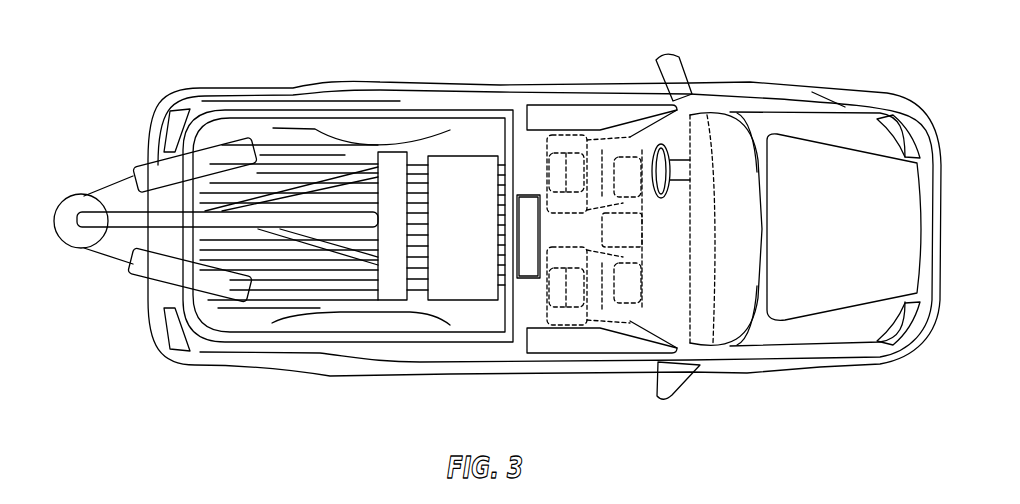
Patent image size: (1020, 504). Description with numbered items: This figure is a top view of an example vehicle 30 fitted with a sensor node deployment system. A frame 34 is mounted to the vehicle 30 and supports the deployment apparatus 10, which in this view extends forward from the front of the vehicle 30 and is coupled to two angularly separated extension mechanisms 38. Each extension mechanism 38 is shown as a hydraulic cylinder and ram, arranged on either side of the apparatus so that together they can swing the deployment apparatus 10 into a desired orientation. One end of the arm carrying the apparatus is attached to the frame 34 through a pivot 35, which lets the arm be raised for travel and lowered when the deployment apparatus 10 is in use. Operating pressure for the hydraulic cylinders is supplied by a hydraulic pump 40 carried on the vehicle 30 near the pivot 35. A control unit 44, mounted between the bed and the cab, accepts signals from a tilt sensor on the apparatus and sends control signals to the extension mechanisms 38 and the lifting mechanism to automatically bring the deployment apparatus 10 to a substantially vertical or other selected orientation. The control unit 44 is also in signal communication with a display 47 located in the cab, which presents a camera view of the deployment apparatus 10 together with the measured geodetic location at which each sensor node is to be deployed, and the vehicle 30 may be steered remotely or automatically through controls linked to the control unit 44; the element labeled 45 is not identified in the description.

The deployment apparatus 10 is at (77, 278).
The vehicle 30 is at (610, 89).
The frame 34 is at (311, 195).
The pivot 35 is at (393, 152).
The extension mechanisms 38 is at (139, 160).
The hydraulic pump 40 is at (472, 156).
The control unit 44 is at (529, 195).
The controller 45 is at (528, 252).
The display 47 is at (627, 287).